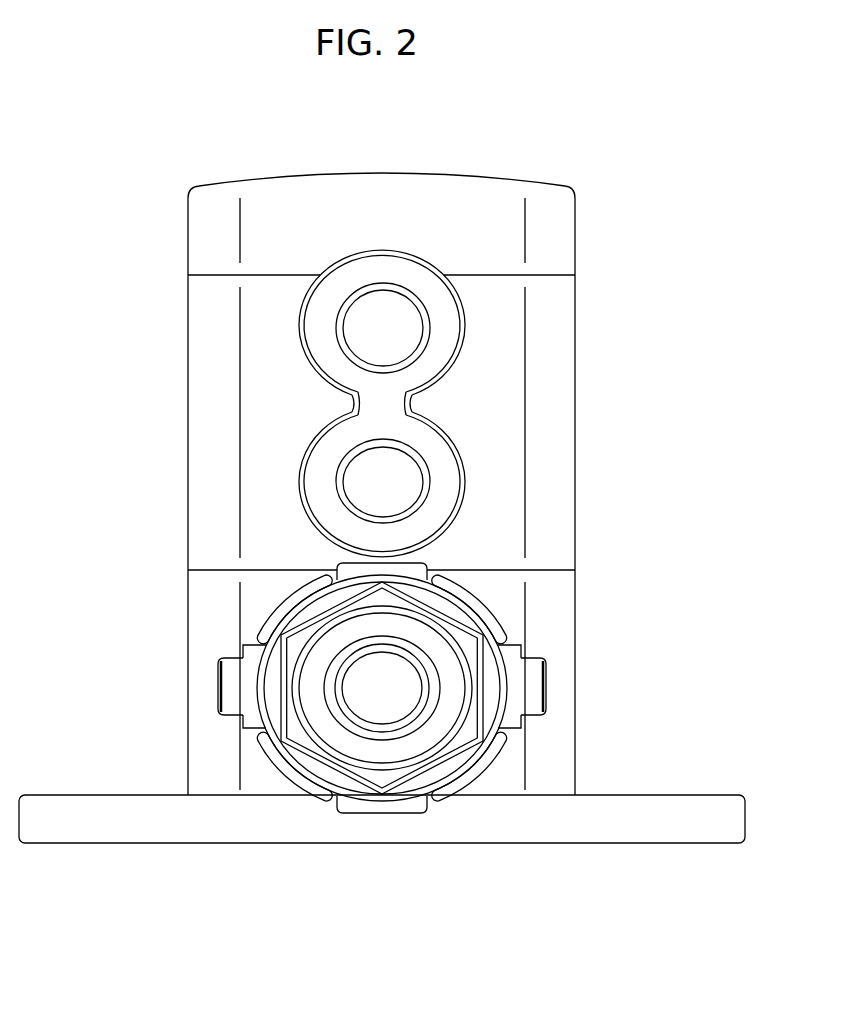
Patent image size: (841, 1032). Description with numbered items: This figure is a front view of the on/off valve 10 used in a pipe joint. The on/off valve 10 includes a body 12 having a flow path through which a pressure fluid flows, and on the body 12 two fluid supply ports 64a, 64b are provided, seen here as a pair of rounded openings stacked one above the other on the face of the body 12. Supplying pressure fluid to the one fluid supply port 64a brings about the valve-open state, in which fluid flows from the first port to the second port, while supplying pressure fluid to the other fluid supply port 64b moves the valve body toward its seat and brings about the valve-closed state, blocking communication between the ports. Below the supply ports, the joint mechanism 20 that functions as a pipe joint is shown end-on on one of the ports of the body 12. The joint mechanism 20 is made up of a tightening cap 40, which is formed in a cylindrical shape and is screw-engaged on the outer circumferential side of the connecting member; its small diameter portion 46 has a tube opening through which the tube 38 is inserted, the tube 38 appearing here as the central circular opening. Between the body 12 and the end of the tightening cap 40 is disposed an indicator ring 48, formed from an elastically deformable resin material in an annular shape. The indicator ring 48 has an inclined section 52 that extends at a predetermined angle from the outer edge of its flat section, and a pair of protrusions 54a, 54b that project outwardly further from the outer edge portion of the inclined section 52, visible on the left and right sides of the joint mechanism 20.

The on/off valve 10 is at (623, 111).
The body 12 is at (583, 343).
The joint mechanism 20 is at (420, 594).
The tube 38 is at (381, 732).
The tightening cap 40 is at (478, 732).
The small diameter portion 46 is at (327, 732).
The indicator ring 48 is at (229, 642).
The inclined section 52 is at (498, 628).
The protrusion 54a is at (528, 683).
The protrusion 54b is at (235, 682).
The fluid supply port 64a is at (367, 477).
The fluid supply port 64b is at (368, 329).